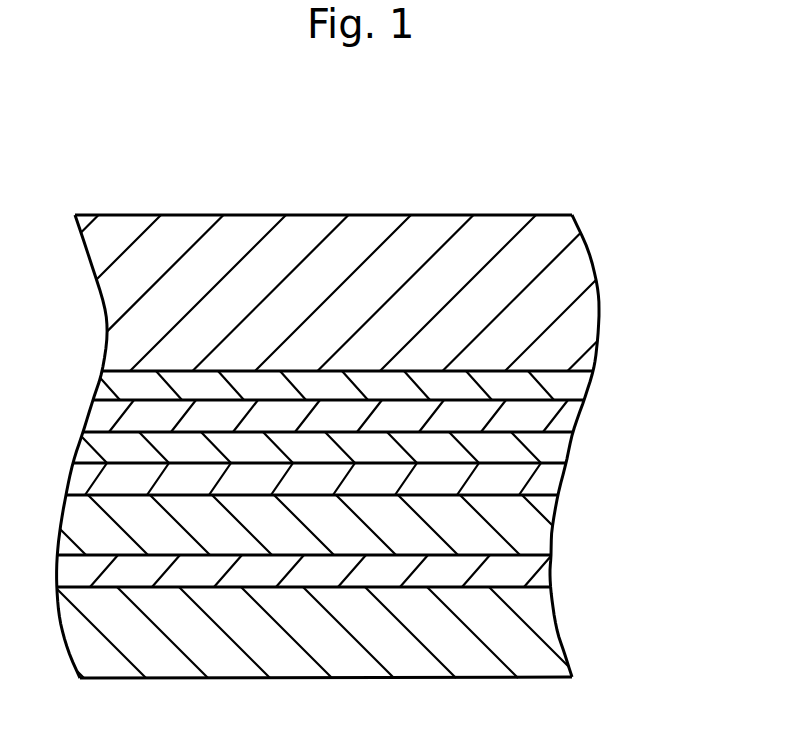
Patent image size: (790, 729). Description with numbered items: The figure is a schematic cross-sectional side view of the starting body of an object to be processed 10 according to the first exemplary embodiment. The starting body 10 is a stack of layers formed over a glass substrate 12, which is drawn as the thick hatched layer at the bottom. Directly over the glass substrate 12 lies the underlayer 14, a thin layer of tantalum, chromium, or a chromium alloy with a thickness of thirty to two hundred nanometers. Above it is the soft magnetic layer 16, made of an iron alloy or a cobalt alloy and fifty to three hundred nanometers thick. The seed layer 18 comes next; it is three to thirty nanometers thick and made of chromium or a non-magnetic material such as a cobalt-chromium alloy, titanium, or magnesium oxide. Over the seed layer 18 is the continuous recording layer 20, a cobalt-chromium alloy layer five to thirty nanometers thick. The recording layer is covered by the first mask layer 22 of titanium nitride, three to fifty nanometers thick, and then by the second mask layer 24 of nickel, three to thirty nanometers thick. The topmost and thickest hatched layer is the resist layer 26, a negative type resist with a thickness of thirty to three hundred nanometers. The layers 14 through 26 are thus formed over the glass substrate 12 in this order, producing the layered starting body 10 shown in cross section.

The starting body of an object to be processed 10 is at (380, 178).
The glass substrate 12 is at (558, 627).
The underlayer 14 is at (552, 572).
The soft magnetic layer 16 is at (553, 525).
The seed layer 18 is at (561, 478).
The continuous recording layer 20 is at (571, 447).
The first mask layer 22 is at (583, 417).
The second mask layer 24 is at (590, 383).
The resist layer 26 is at (597, 283).